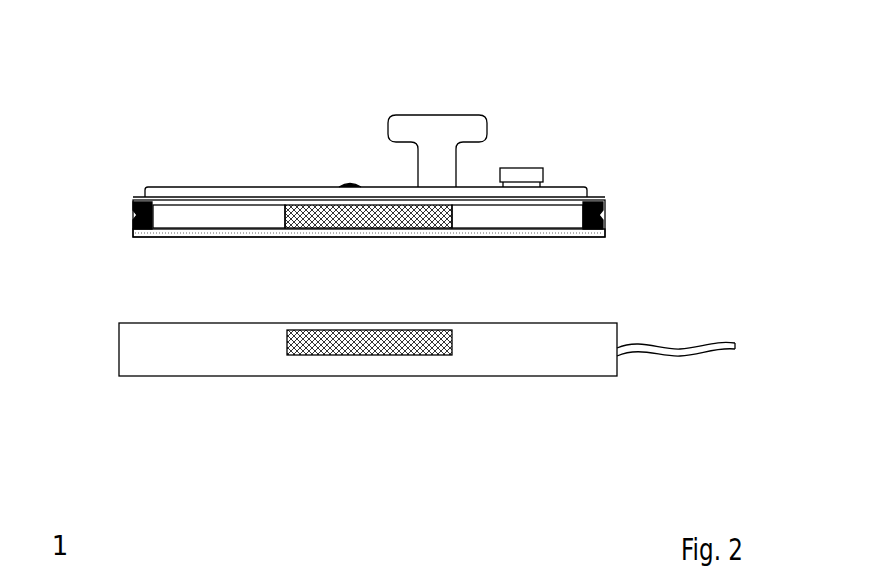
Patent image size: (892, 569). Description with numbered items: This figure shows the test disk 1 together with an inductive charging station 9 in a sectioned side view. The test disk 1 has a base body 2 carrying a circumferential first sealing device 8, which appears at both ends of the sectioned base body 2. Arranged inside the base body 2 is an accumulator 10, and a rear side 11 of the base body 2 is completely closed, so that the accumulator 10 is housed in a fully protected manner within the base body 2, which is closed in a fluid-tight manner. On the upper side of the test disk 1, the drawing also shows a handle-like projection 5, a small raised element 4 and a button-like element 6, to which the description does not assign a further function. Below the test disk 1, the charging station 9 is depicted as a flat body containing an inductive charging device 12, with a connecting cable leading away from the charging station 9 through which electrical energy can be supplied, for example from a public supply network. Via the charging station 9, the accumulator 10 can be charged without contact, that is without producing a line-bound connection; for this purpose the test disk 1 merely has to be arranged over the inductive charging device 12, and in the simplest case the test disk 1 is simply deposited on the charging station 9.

The test disk 1 is at (117, 82).
The base body 2 is at (129, 187).
The indicator 4 is at (350, 184).
The handle 5 is at (440, 127).
The button 6 is at (532, 168).
The first sealing device 8 is at (603, 208).
The inductive charging station 9 is at (112, 386).
The accumulator 10 is at (303, 215).
The rear side 11 is at (565, 238).
The inductive charging device 12 is at (317, 340).